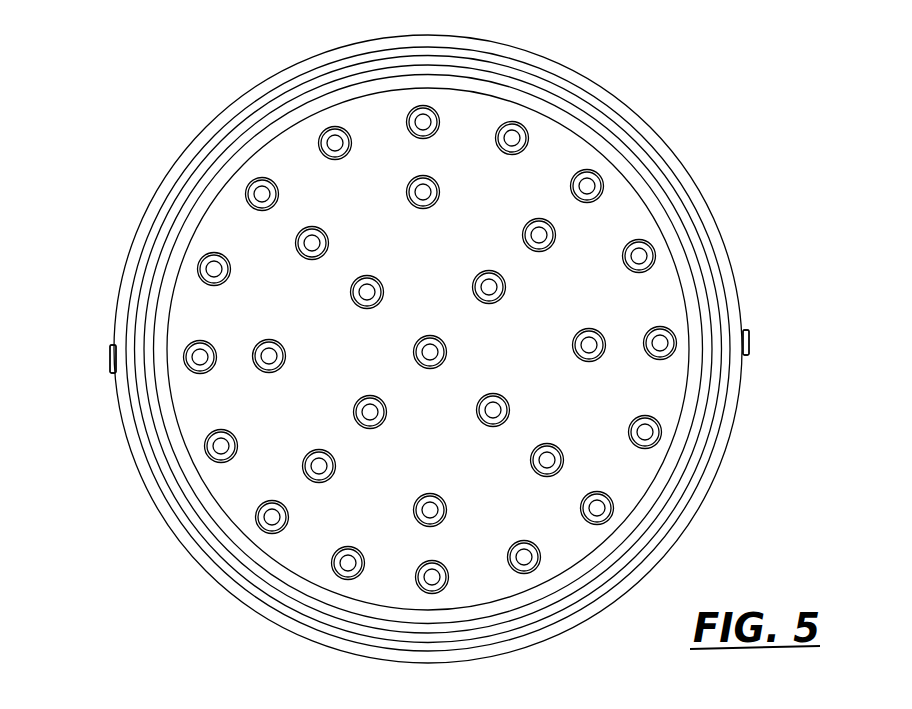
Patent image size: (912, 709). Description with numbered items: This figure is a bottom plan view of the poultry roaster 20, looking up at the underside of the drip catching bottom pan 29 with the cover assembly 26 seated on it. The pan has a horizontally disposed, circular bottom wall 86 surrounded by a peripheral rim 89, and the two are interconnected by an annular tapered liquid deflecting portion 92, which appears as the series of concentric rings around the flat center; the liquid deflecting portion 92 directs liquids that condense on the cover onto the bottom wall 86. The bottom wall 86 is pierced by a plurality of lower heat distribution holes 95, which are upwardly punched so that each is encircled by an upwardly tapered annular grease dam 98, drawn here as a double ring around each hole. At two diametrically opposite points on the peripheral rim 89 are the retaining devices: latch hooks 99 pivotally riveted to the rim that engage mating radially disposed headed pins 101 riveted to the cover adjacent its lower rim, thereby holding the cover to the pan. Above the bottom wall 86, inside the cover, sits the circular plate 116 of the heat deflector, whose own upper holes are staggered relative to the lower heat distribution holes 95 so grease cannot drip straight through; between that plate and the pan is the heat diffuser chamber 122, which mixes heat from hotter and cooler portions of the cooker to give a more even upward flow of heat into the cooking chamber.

The poultry roaster 20 is at (636, 90).
The cover assembly 26 is at (690, 154).
The peripheral rim 89 is at (722, 222).
The bottom pan 29 is at (188, 195).
The liquid deflecting portion 92 is at (200, 498).
The bottom wall 86 is at (565, 309).
The latch hooks 99 is at (110, 345).
The headed pins 101 is at (110, 368).
The heat diffuser chamber 122 is at (330, 133).
The circular plate 116 is at (321, 242).
The grease dams 98 is at (413, 352).
The lower heat distribution holes 95 is at (431, 369).